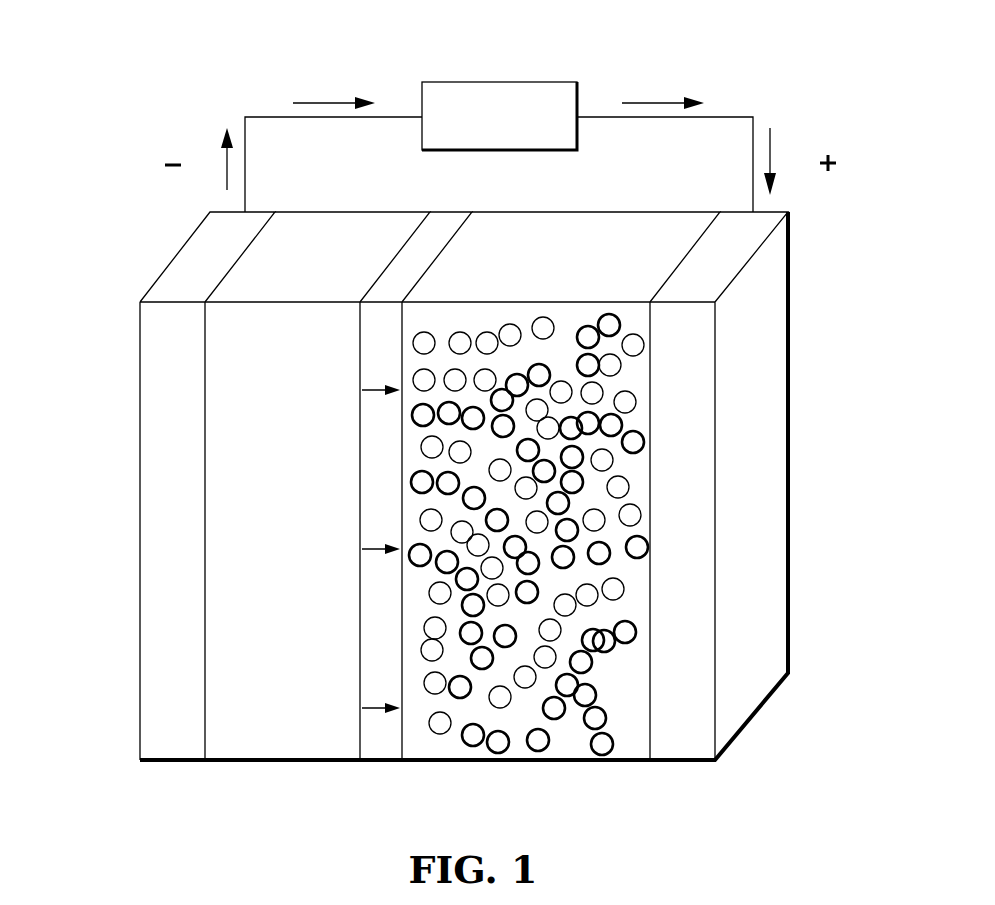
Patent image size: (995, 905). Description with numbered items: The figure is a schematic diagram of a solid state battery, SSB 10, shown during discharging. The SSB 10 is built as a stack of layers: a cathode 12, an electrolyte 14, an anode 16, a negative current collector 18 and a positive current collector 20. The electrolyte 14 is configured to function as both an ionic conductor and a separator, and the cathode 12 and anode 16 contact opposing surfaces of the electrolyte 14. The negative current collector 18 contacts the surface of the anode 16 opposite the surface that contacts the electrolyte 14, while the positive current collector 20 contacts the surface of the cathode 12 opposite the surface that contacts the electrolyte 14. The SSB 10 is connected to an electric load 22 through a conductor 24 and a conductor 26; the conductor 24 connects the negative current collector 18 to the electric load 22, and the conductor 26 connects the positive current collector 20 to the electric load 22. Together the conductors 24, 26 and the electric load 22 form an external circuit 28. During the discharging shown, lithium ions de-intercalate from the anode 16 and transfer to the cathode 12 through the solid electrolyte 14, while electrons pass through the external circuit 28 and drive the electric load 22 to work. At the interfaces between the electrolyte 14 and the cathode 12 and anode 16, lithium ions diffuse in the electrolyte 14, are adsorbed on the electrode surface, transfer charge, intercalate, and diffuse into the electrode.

The solid state battery 10 is at (100, 712).
The cathode 12 is at (525, 762).
The electrolyte 14 is at (378, 762).
The anode 16 is at (280, 762).
The negative current collector 18 is at (172, 762).
The positive current collector 20 is at (682, 762).
The electric load 22 is at (498, 82).
The conductor 24 is at (355, 120).
The conductor 26 is at (682, 120).
The external circuit 28 is at (234, 65).